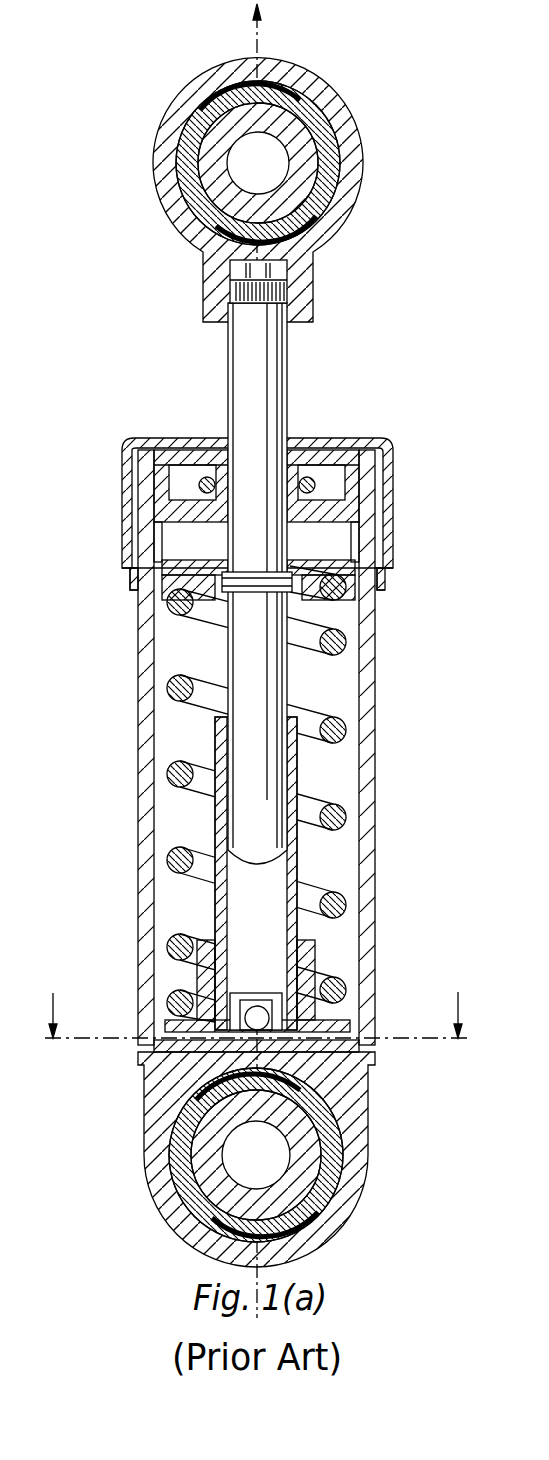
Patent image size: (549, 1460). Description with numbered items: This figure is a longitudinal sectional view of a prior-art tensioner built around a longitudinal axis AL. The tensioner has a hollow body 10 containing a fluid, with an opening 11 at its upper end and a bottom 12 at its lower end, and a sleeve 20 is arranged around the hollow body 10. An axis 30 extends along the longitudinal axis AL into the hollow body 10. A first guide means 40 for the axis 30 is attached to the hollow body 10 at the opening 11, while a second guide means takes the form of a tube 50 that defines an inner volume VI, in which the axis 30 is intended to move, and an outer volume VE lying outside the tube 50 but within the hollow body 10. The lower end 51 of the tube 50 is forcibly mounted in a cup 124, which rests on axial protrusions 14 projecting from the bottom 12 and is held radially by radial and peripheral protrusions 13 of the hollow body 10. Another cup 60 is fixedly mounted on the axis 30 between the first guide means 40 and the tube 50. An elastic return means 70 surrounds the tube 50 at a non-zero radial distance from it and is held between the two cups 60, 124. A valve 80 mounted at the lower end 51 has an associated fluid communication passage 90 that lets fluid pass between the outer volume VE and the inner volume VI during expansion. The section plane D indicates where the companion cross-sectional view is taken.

The longitudinal axis AL is at (262, 42).
The hollow body 10 is at (138, 777).
The opening 11 is at (385, 552).
The bottom 12 is at (352, 1098).
The radial and peripheral protrusions 13 is at (280, 1045).
The axial protrusions 14 is at (165, 1080).
The sleeve 20 is at (122, 479).
The axis 30 is at (272, 396).
The first guide means 40 is at (366, 496).
The tube 50 is at (298, 768).
The lower end of the tube 51 is at (305, 965).
The cup 60 is at (200, 556).
The elastic return means 70 is at (305, 640).
The valve 80 is at (195, 932).
The fluid communication passage 90 is at (366, 1078).
The cup 124 is at (208, 940).
The outer volume VE is at (184, 812).
The inner volume VI is at (268, 887).
The section D- D is at (256, 1014).